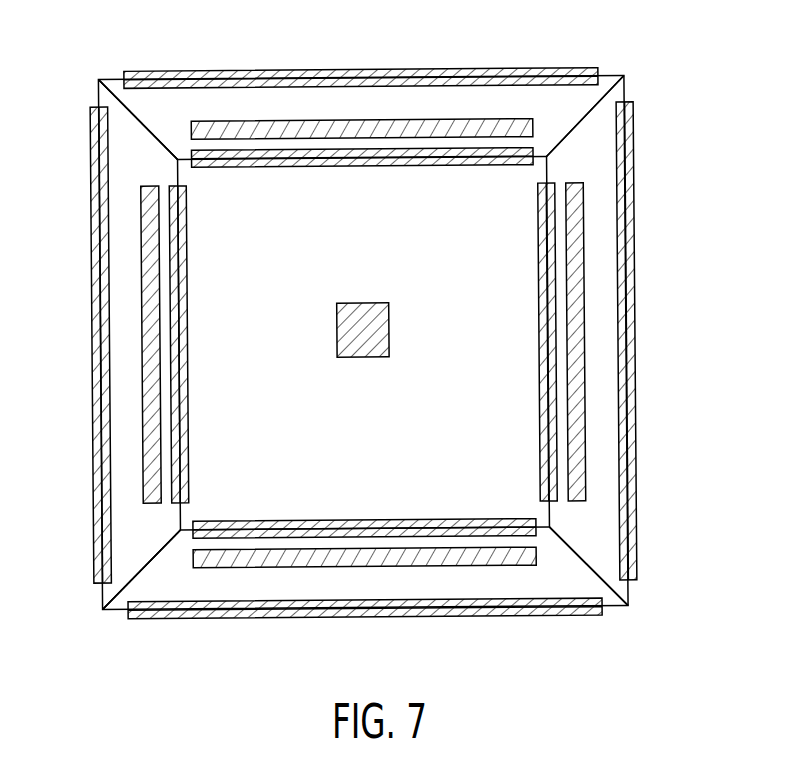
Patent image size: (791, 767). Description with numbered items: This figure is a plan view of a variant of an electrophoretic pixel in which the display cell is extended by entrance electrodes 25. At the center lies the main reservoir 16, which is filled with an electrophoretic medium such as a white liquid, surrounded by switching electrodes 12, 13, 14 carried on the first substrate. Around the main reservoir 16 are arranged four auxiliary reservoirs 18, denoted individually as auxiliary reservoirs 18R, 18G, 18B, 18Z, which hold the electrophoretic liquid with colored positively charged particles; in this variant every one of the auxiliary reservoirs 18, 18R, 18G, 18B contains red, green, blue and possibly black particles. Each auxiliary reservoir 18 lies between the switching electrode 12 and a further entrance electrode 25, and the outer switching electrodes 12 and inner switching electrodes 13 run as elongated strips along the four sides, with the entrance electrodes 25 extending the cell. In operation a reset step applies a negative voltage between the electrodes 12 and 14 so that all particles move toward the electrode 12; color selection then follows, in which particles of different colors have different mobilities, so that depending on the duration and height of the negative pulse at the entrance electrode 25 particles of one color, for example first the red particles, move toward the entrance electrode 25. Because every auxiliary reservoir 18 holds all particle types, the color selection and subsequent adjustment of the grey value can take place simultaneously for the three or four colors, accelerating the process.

The switching electrode 12 is at (365, 77).
The switching electrode 13 is at (300, 153).
The switching electrode 14 is at (355, 315).
The main reservoir 16 is at (510, 462).
The auxiliary reservoir 18 is at (127, 214).
The auxiliary reservoir 18R is at (128, 333).
The auxiliary reservoir 18G is at (550, 110).
The auxiliary reservoir 18B is at (592, 153).
The auxiliary reservoir 18Z is at (393, 575).
The entrance electrode 25 is at (245, 128).